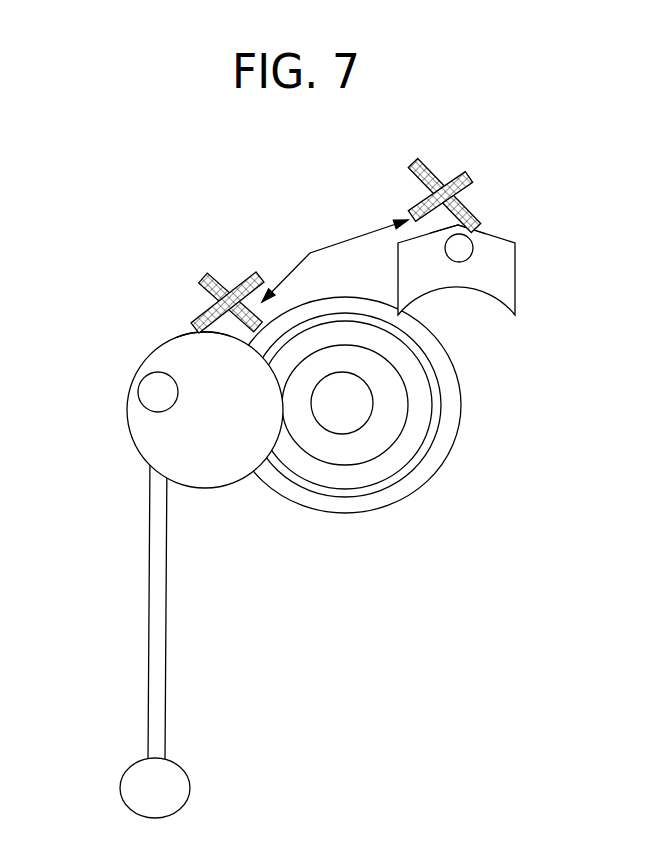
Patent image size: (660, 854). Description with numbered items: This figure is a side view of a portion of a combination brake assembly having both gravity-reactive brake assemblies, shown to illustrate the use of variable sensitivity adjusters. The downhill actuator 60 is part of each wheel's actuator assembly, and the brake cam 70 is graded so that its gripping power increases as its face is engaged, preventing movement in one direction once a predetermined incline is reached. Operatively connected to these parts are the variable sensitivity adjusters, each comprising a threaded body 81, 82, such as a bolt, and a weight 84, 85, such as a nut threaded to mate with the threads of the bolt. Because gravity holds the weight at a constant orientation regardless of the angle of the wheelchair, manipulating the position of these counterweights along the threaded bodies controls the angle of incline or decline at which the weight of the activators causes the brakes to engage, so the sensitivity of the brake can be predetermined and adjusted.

The downhill actuator 60 is at (114, 466).
The brake cam 70 is at (540, 272).
The threaded body 81 is at (197, 331).
The threaded body 82 is at (475, 222).
The weight 84 is at (211, 287).
The weight 85 is at (448, 170).